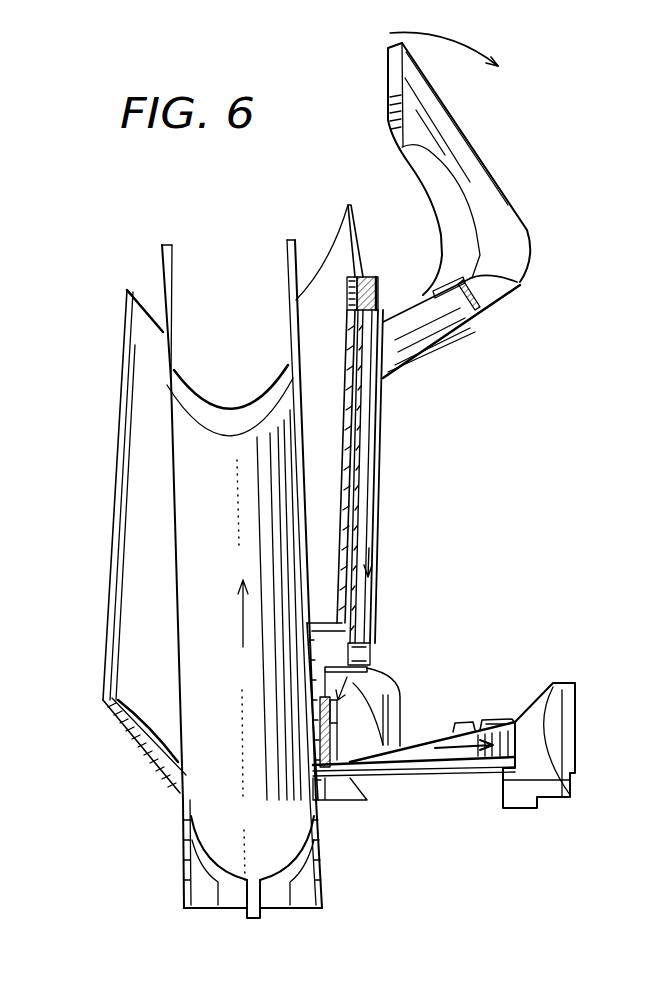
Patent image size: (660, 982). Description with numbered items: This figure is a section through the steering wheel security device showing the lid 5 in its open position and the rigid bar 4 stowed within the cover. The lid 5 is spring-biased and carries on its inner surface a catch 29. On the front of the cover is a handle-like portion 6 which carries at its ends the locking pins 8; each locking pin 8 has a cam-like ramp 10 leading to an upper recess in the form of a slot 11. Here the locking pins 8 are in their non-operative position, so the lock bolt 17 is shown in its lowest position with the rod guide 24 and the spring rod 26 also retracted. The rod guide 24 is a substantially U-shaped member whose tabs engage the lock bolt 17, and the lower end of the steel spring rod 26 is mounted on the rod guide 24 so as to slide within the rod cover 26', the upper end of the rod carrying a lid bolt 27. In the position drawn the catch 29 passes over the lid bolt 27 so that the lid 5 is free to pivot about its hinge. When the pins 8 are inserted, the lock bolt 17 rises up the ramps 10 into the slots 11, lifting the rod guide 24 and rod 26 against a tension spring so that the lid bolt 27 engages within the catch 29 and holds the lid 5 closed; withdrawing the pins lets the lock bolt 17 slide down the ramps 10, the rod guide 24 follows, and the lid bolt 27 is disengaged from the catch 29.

The rigid bar 4 is at (185, 596).
The lid 5 is at (483, 183).
The handle-like portion 6 is at (560, 733).
The locking pin 8 is at (437, 773).
The ramp 10 is at (426, 729).
The slot 11 is at (480, 720).
The lock bolt 17 is at (336, 717).
The rod guide 24 is at (360, 682).
The spring rod 26 is at (399, 471).
The rod cover 26' is at (412, 476).
The lid bolt 27 is at (370, 275).
The catch 29 is at (517, 282).